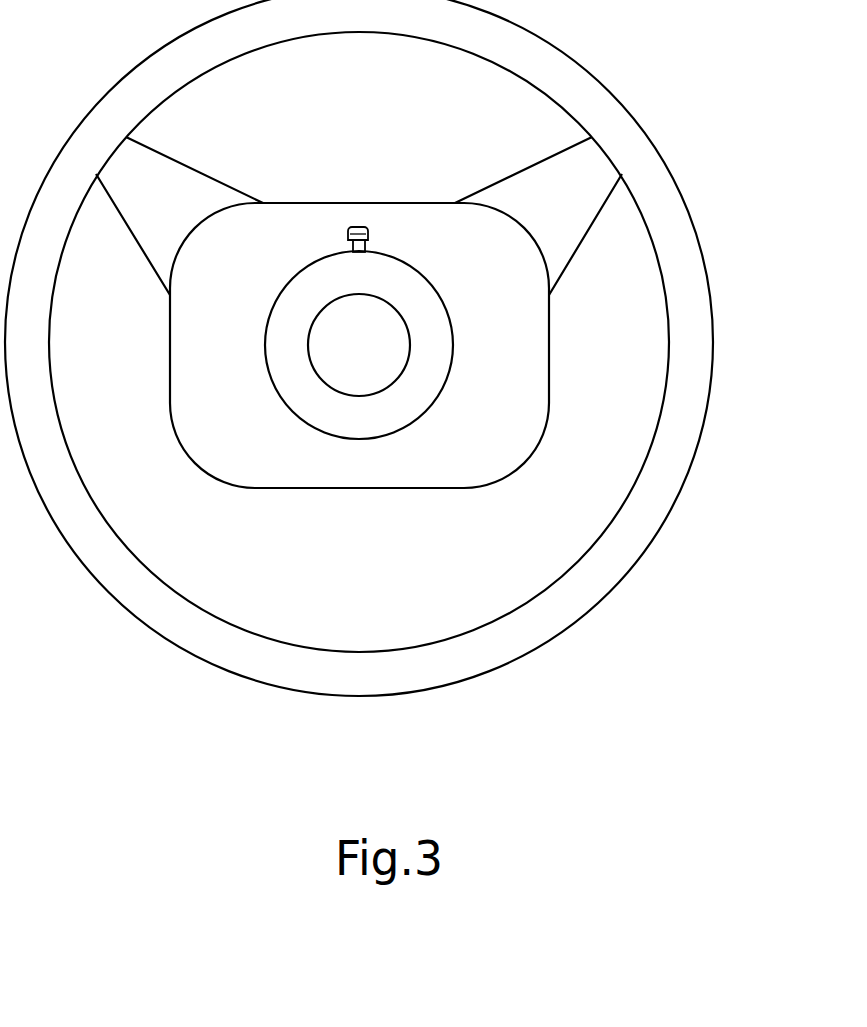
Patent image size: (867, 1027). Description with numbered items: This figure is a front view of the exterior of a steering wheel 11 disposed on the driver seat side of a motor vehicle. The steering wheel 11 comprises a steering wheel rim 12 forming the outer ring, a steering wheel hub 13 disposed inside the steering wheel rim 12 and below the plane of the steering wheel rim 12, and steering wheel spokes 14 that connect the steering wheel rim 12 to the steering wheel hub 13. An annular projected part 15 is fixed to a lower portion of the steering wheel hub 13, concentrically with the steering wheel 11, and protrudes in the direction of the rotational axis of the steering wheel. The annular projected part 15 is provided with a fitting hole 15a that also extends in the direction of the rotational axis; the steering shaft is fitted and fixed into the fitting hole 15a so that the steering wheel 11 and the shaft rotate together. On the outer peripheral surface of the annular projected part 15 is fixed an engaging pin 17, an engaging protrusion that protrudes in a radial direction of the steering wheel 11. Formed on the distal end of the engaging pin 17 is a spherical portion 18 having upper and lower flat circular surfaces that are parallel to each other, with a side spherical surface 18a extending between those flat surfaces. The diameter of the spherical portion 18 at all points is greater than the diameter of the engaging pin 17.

The steering wheel 11 is at (675, 129).
The steering wheel rim 12 is at (107, 92).
The steering wheel hub 13 is at (170, 356).
The steering wheel spokes 14 is at (218, 177).
The annular projected part 15 is at (440, 395).
The fitting hole 15a is at (372, 386).
The engaging pin 17 is at (367, 242).
The spherical portion 18 is at (357, 225).
The side spherical surface 18a is at (373, 232).